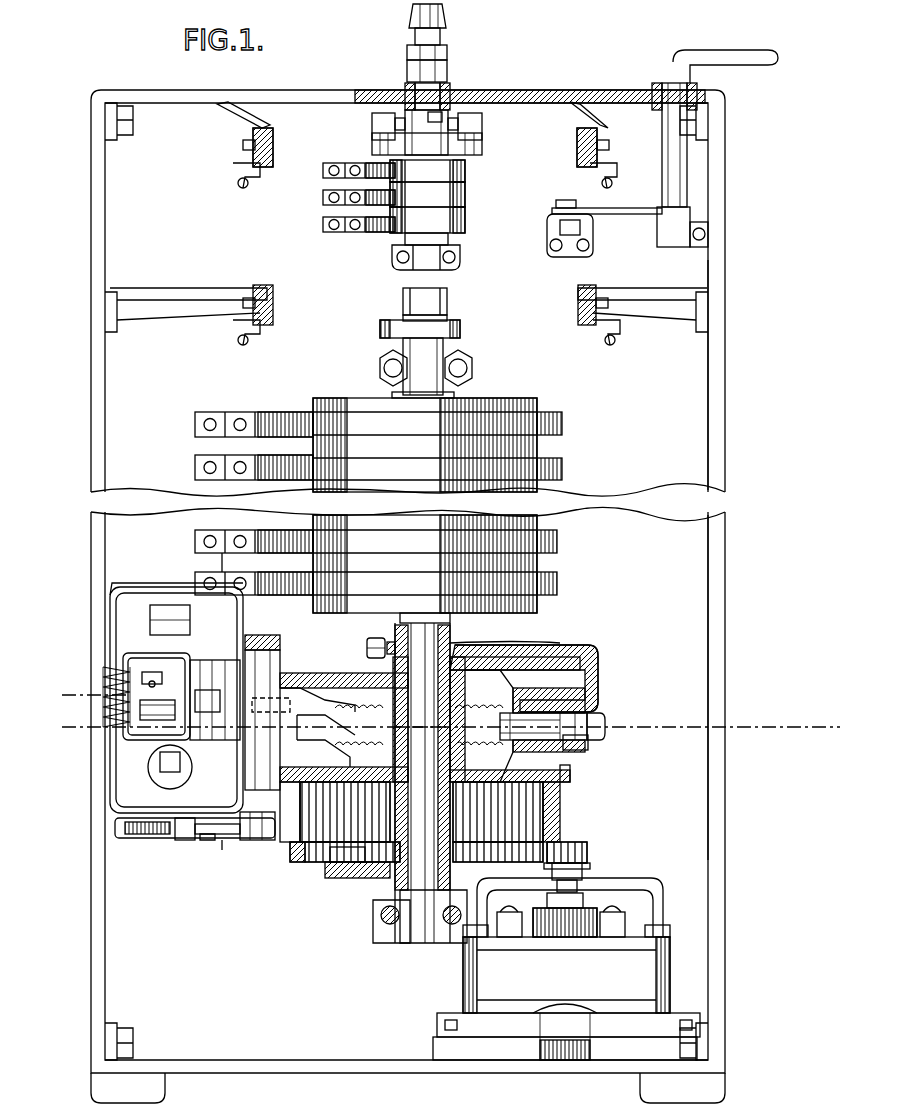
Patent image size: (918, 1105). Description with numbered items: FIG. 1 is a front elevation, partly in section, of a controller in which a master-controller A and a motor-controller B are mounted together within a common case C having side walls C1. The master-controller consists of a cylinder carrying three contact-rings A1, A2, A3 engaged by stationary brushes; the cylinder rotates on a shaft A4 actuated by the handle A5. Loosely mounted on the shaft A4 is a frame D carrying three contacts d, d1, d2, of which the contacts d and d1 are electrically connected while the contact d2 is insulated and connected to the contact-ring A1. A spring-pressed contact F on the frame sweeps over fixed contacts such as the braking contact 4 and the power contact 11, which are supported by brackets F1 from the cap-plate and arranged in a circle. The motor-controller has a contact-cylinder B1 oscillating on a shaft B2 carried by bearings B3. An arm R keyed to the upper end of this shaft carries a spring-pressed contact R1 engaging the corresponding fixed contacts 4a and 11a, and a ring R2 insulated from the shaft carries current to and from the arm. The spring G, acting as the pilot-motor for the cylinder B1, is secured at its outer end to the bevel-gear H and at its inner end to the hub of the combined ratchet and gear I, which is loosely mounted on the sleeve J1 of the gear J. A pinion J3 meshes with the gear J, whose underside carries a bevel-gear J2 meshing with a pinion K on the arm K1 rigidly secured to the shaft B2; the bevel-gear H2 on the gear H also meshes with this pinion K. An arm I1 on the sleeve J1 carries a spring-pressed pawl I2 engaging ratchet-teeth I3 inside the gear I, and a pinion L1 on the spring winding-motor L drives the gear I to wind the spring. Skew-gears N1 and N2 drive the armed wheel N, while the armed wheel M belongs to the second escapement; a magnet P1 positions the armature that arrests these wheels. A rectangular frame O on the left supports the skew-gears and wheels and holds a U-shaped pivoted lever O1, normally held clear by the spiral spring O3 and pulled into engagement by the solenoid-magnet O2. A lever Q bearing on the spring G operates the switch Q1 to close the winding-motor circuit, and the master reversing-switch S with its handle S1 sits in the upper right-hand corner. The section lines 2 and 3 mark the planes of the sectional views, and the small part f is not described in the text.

The case C is at (314, 92).
The sides of the casing C1 is at (725, 393).
The master-controller A is at (339, 197).
The contact-ring A1 is at (465, 175).
The contact-ring A2 is at (465, 198).
The contact-ring A3 is at (465, 226).
The shaft A4 is at (445, 88).
The handle A5 is at (440, 22).
The frame D is at (385, 146).
The spring-pressed contact F is at (470, 143).
The brackets F1 is at (240, 125).
The contact d is at (380, 123).
The contact d1 is at (465, 127).
The contact d2 is at (440, 116).
The fixed contact 11 is at (273, 155).
The fixed contact 11a is at (273, 315).
The fixed contact 4 is at (580, 160).
The fixed contact 4a is at (578, 315).
The master reversing-switch S is at (637, 208).
The handle S1 is at (753, 60).
The arm R is at (402, 302).
The spring-pressed contact R1 is at (425, 302).
The ring R2 is at (460, 328).
The motor-controller B is at (254, 482).
The contact-cylinder B1 is at (530, 445).
The shaft B2 is at (422, 948).
The bearings B3 is at (470, 372).
The section line 2 is at (444, 711).
The section line 3 is at (220, 711).
The armed wheel M is at (213, 615).
The rectangular frame O is at (280, 663).
The U-shaped pivoted lever O1 is at (170, 655).
The solenoid-magnet O2 is at (150, 765).
The spiral spring O3 is at (105, 672).
The pin f is at (155, 673).
The magnet P1 is at (151, 713).
The wheel N is at (195, 712).
The skew-gear N1 is at (295, 705).
The skew-gear N2 is at (271, 701).
The gear J is at (575, 652).
The sleeve J1 is at (385, 735).
The bevel-gear J2 is at (545, 690).
The pinion J3 is at (280, 665).
The pinion K is at (555, 712).
The arm K1 is at (555, 658).
The bevel-gear H is at (570, 770).
The bevel-gear H2 is at (585, 748).
The spring G is at (548, 812).
The combined ratchet and gear I is at (303, 865).
The arm I1 is at (370, 878).
The spring-pressed pawl I2 is at (330, 868).
The ratchet-teeth I3 is at (575, 852).
The spring winding-motor L is at (630, 958).
The pinion L1 is at (575, 845).
The lever Q is at (260, 840).
The switch Q1 is at (175, 840).